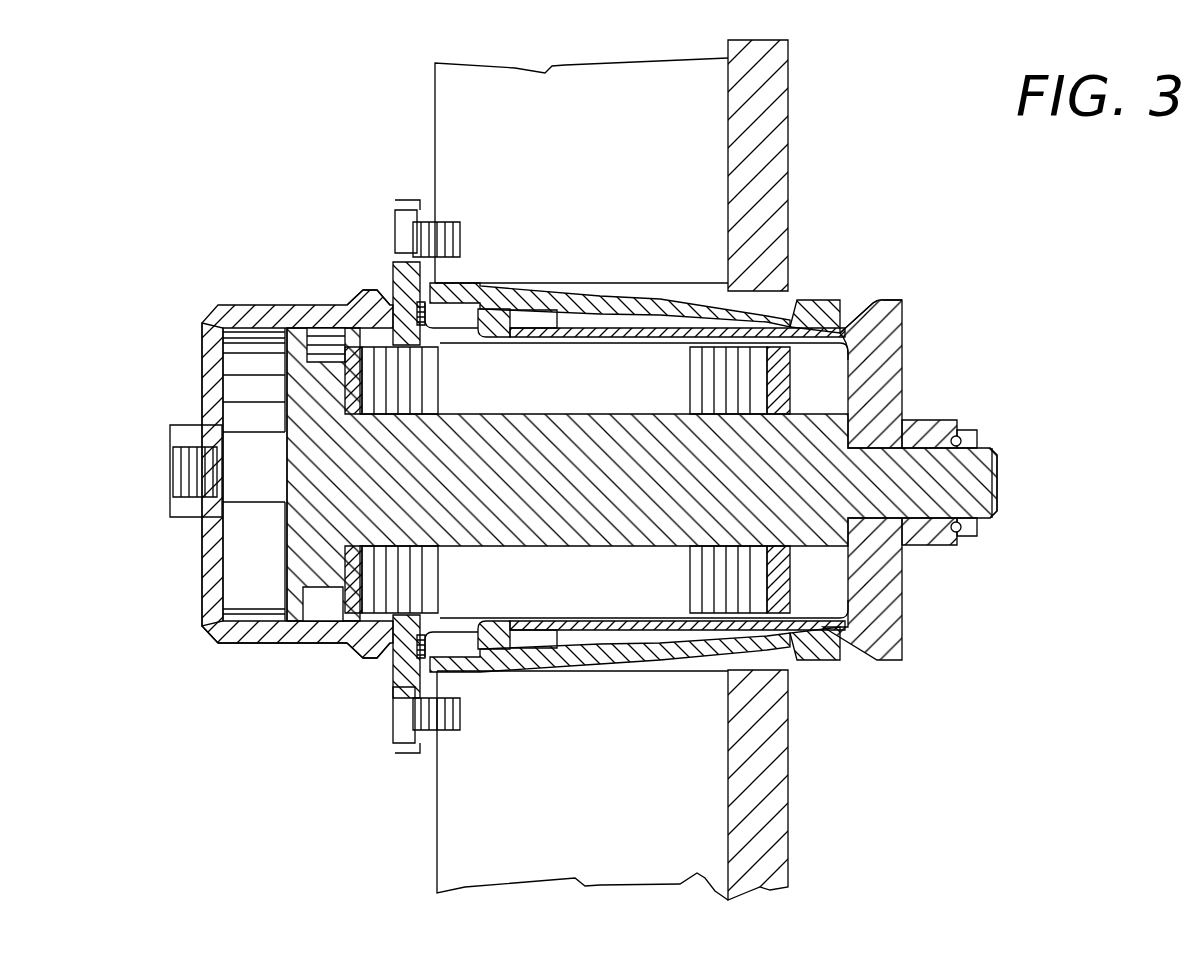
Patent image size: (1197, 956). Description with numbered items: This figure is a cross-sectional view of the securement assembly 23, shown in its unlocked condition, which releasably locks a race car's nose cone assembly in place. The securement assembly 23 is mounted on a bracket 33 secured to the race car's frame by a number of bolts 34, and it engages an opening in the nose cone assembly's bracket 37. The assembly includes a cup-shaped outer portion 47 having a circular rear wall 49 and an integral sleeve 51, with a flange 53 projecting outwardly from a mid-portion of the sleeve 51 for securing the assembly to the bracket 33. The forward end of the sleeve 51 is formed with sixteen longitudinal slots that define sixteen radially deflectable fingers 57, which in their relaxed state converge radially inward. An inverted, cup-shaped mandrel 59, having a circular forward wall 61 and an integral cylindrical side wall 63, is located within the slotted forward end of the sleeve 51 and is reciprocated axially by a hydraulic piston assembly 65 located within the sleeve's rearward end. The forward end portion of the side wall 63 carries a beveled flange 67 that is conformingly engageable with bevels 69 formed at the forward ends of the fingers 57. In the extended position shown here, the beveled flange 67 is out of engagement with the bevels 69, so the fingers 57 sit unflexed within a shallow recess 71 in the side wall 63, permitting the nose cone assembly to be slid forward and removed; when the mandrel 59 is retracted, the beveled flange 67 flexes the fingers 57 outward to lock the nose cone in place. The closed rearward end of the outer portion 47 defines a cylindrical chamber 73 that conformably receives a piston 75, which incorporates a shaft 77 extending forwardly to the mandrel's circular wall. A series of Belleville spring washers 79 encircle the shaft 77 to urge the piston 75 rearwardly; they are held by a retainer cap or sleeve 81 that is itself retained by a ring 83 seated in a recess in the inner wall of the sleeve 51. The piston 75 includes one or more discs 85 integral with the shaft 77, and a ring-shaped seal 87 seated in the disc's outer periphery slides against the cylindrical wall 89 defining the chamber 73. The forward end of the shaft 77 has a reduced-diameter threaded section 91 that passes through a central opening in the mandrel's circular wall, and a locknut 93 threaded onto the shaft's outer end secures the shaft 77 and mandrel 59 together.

The securement assembly 23 is at (207, 330).
The bracket 33 is at (535, 95).
The bolts 34 is at (447, 215).
The bracket 37 is at (770, 105).
The cup-shaped outer portion 47 is at (262, 643).
The circular rear wall 49 is at (212, 375).
The sleeve 51 is at (348, 325).
The flange 53 is at (417, 200).
The fingers 57 is at (790, 345).
The mandrel 59 is at (640, 323).
The circular forward wall 61 is at (878, 360).
The cylindrical side wall 63 is at (540, 652).
The hydraulic piston assembly 65 is at (320, 497).
The beveled flange 67 is at (812, 325).
The bevels 69 is at (878, 300).
The shallow recess 71 is at (780, 318).
The cylindrical chamber 73 is at (250, 545).
The piston 75 is at (285, 385).
The shaft 77 is at (558, 490).
The Belleville spring washers 79 is at (412, 388).
The retainer cap or sleeve 81 is at (555, 333).
The ring 83 is at (420, 320).
The discs 85 is at (300, 358).
The ring-shaped seal 87 is at (322, 605).
The cylindrical wall 89 is at (215, 640).
The threaded section 91 is at (975, 480).
The locknut 93 is at (930, 440).